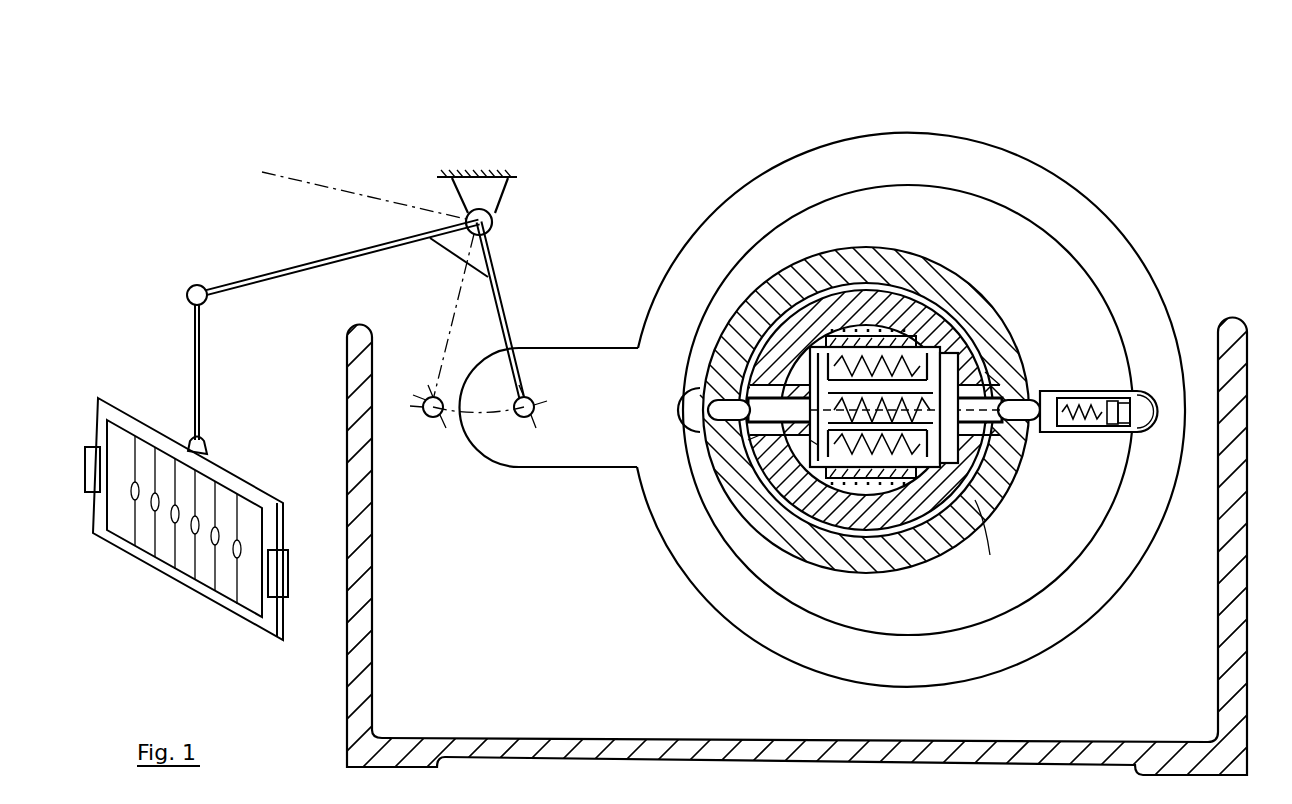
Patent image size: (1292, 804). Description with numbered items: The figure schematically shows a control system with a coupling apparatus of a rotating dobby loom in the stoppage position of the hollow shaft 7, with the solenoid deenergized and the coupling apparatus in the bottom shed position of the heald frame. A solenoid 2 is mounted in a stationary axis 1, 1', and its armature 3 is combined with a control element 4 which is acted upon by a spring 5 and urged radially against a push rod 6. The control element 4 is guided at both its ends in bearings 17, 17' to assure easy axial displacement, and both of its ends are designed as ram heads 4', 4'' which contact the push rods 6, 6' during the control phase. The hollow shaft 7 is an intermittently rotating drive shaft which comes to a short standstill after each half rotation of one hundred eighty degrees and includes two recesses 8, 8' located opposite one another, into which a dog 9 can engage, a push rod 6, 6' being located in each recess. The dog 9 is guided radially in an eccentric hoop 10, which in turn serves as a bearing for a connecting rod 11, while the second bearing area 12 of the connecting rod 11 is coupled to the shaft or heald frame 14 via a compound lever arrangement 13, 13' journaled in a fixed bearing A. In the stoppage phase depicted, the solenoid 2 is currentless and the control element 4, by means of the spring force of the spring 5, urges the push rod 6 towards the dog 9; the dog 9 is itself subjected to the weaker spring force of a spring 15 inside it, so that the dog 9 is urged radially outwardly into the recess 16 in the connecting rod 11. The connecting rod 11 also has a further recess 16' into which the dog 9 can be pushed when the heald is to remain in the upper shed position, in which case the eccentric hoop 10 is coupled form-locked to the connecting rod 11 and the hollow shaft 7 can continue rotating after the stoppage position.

The stationary axis 1 is at (905, 257).
The stationary axis 1' is at (810, 601).
The solenoid 2 is at (928, 355).
The armature 3 is at (950, 360).
The control element 4 is at (870, 305).
The head 4' is at (1058, 240).
The head 4'' is at (680, 535).
The spring 5 is at (824, 336).
The push rod 6 is at (1086, 281).
The push rod 6' is at (690, 287).
The hollow shaft 7 is at (752, 322).
The recess 8 is at (1112, 494).
The recess 8' is at (688, 487).
The dog 9 is at (1103, 393).
The eccentric hoop 10 is at (1022, 562).
The connecting rod 11 is at (552, 448).
The second bearing area 12 is at (522, 415).
The compound lever arrangement 13 is at (337, 282).
The compound lever arrangement 13' is at (519, 314).
The heald frame 14 is at (105, 413).
The spring 15 is at (1087, 415).
The recess 16 is at (1210, 394).
The recess 16' is at (634, 338).
The bearing 17 is at (1028, 615).
The bearing 17' is at (725, 561).
The fixed bearing A is at (492, 222).